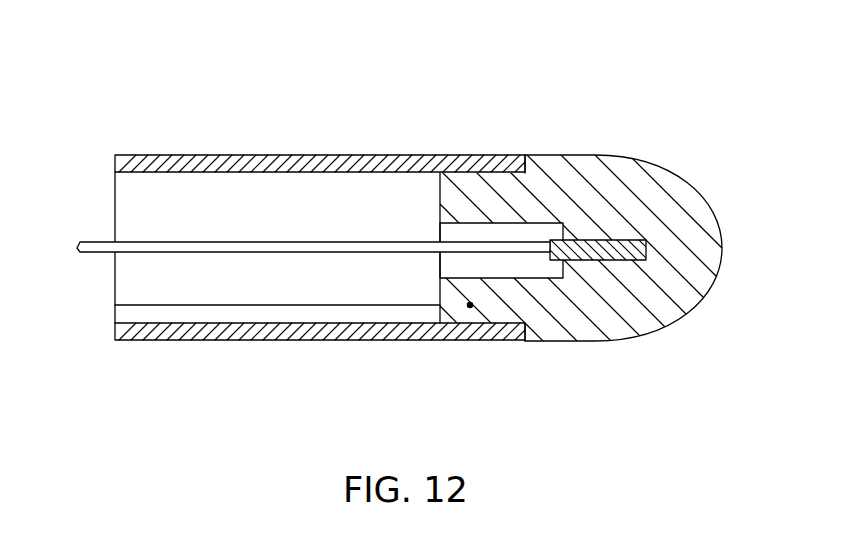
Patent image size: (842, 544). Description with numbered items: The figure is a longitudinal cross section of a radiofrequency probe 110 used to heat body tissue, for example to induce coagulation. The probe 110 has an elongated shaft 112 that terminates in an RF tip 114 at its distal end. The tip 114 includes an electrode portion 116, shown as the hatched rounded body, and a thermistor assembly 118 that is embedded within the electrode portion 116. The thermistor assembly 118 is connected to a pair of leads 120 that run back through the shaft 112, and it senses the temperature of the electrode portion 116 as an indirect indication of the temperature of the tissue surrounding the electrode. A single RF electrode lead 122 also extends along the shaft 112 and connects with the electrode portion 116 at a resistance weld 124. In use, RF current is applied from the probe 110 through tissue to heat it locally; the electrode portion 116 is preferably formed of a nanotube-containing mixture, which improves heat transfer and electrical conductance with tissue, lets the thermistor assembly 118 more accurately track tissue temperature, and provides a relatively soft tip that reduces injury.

The radiofrequency probe 110 is at (459, 216).
The shaft 112 is at (153, 155).
The RF tip 114 is at (678, 342).
The electrode portion 116 is at (683, 182).
The thermistor assembly 118 is at (622, 262).
The leads 120 is at (328, 242).
The RF electrode lead 122 is at (187, 307).
The resistance weld 124 is at (470, 305).